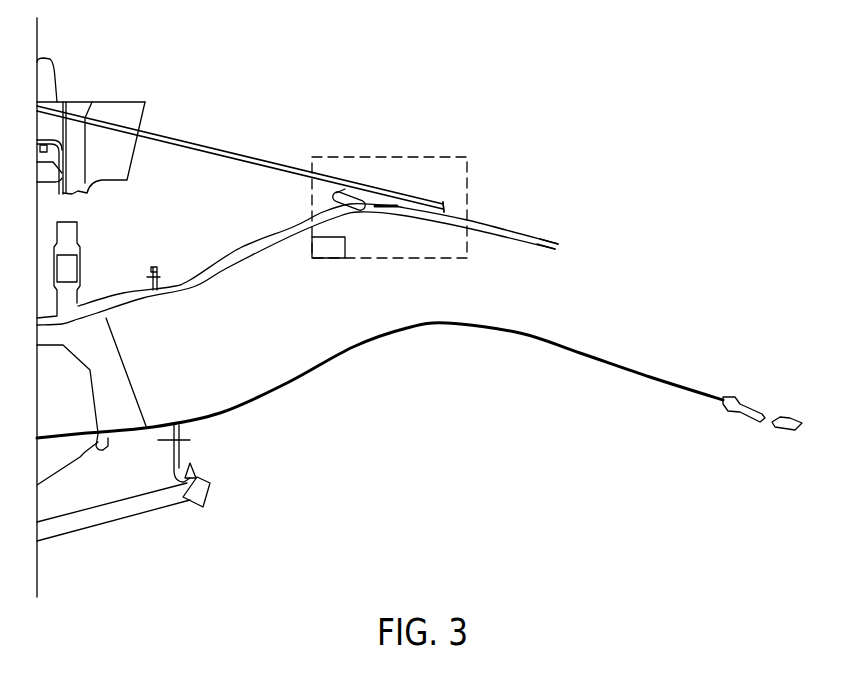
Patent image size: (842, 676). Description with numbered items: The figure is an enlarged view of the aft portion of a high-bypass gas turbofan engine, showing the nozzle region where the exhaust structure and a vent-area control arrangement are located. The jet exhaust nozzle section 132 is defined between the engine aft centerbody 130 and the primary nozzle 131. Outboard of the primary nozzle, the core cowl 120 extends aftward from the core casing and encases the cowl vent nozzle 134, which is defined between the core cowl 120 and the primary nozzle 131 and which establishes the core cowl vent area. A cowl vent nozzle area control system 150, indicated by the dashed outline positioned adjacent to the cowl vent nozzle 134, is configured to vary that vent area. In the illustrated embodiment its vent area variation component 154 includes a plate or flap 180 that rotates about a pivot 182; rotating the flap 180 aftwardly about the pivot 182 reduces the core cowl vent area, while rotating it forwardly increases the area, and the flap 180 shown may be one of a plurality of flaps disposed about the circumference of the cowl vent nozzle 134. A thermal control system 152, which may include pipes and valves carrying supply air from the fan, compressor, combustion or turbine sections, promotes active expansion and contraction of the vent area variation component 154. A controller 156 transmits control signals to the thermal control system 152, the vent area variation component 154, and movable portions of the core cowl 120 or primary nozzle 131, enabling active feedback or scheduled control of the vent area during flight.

The core cowl 120 is at (268, 163).
The engine aft centerbody 130 is at (615, 363).
The primary nozzle 131 is at (545, 248).
The jet exhaust nozzle section 132 is at (607, 302).
The cowl vent nozzle 134 is at (456, 210).
The cowl vent nozzle area control system 150 is at (373, 259).
The thermal control system 152 is at (242, 247).
The vent area variation component 154 is at (347, 191).
The controller 156 is at (327, 247).
The flap 180 is at (372, 187).
The pivot 182 is at (373, 212).